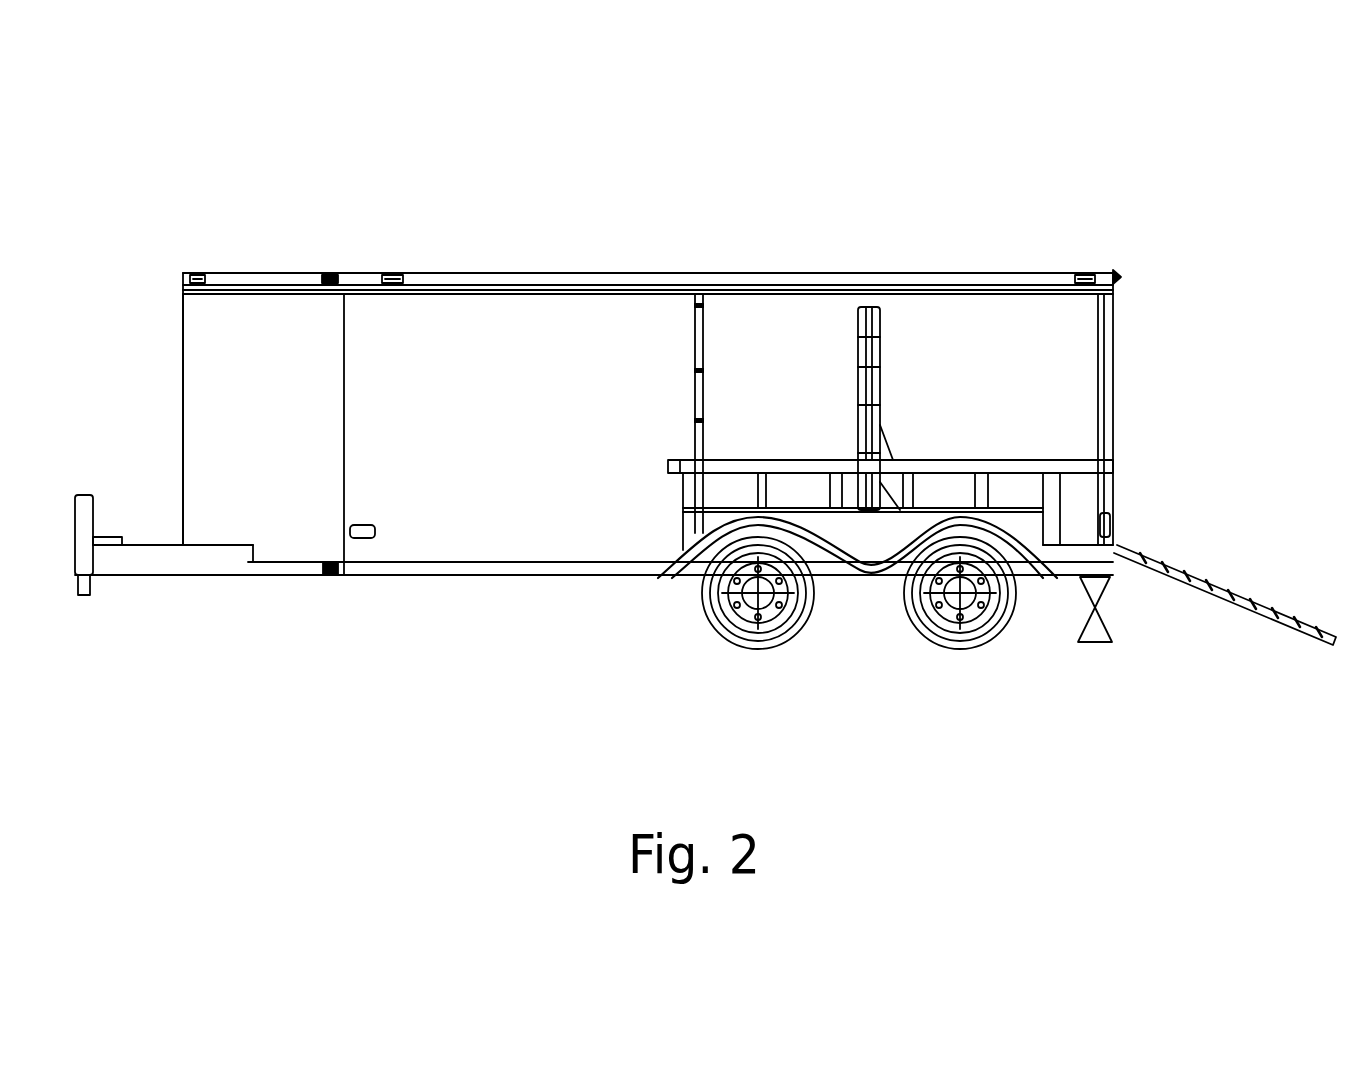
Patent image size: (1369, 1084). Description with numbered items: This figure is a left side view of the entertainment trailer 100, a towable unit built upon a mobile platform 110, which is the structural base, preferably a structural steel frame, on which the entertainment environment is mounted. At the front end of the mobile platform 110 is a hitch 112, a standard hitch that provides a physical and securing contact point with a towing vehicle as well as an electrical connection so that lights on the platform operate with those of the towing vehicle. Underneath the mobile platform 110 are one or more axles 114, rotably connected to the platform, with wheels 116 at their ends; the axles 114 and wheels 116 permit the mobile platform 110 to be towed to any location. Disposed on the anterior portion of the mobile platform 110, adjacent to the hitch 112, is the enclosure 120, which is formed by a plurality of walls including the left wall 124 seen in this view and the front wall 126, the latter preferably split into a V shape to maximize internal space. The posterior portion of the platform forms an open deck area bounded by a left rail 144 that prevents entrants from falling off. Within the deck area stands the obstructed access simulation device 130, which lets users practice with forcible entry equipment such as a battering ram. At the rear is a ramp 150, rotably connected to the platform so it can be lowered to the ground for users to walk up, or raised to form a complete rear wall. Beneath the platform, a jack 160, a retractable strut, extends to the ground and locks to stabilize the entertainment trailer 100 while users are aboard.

The entertainment trailer 100 is at (697, 162).
The mobile platform 110 is at (172, 580).
The hitch 112 is at (92, 595).
The axle 114 is at (770, 605).
The wheel 116 is at (973, 653).
The enclosure 120 is at (517, 272).
The left wall 124 is at (507, 545).
The front wall 126 is at (272, 545).
The obstructed access simulation device 130 is at (862, 298).
The left rail 144 is at (1055, 453).
The ramp 150 is at (1177, 538).
The jack 160 is at (1088, 650).